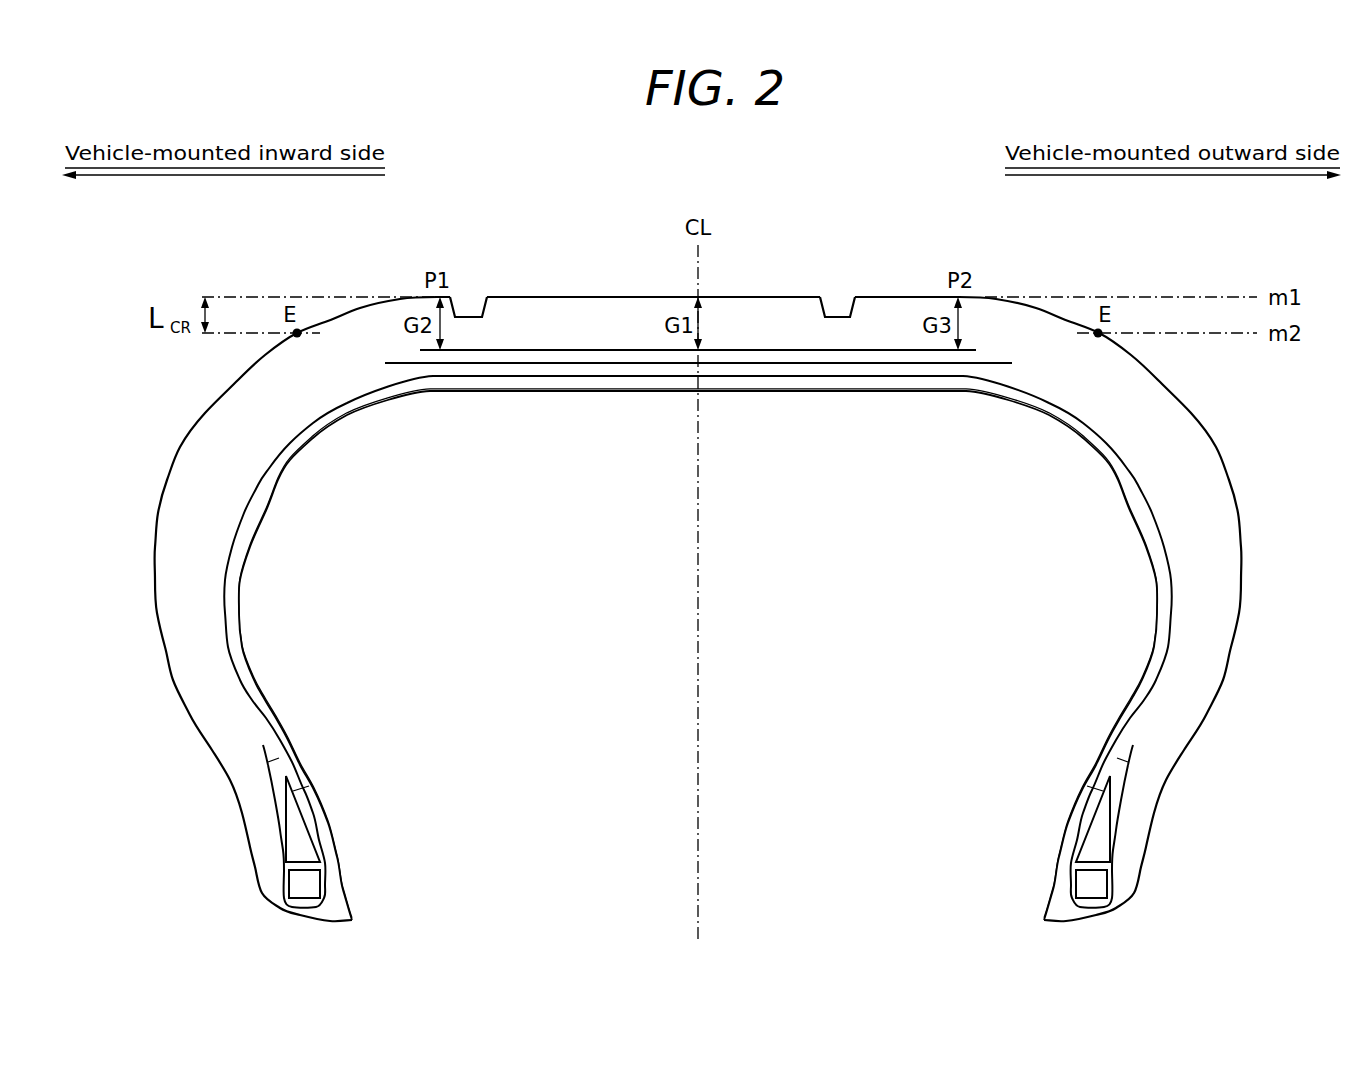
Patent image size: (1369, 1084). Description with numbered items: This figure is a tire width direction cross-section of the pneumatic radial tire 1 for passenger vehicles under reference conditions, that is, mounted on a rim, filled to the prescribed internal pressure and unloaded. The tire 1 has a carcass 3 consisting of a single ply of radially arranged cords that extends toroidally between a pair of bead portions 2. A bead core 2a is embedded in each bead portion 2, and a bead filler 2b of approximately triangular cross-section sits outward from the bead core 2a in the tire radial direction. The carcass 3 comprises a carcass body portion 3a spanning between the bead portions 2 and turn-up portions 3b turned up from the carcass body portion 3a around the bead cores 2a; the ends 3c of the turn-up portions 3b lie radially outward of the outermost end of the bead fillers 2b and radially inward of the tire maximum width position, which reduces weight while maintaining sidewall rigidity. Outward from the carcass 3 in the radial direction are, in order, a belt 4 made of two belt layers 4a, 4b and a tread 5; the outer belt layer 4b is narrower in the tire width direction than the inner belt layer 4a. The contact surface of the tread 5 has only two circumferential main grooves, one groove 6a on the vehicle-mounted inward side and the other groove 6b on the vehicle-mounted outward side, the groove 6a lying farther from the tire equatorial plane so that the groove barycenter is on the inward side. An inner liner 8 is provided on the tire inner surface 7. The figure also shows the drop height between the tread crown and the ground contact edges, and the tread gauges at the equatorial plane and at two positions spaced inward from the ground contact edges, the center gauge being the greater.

The tire 1 is at (1183, 245).
The bead portions 2 is at (696, 838).
The bead core 2a is at (310, 886).
The bead filler 2b is at (302, 845).
The carcass 3 is at (696, 642).
The carcass body portion 3a is at (308, 789).
The carcass turn-up portions 3b is at (278, 759).
The ends of the carcass turn-up portions 3c is at (254, 747).
The belt 4 is at (724, 341).
The belt layer 4a is at (974, 364).
The belt layer 4b is at (973, 341).
The tread 5 is at (727, 280).
The circumferential main groove 6a is at (478, 315).
The circumferential main groove 6b is at (836, 315).
The tire inner surface 7 is at (742, 398).
The inner liner 8 is at (698, 655).